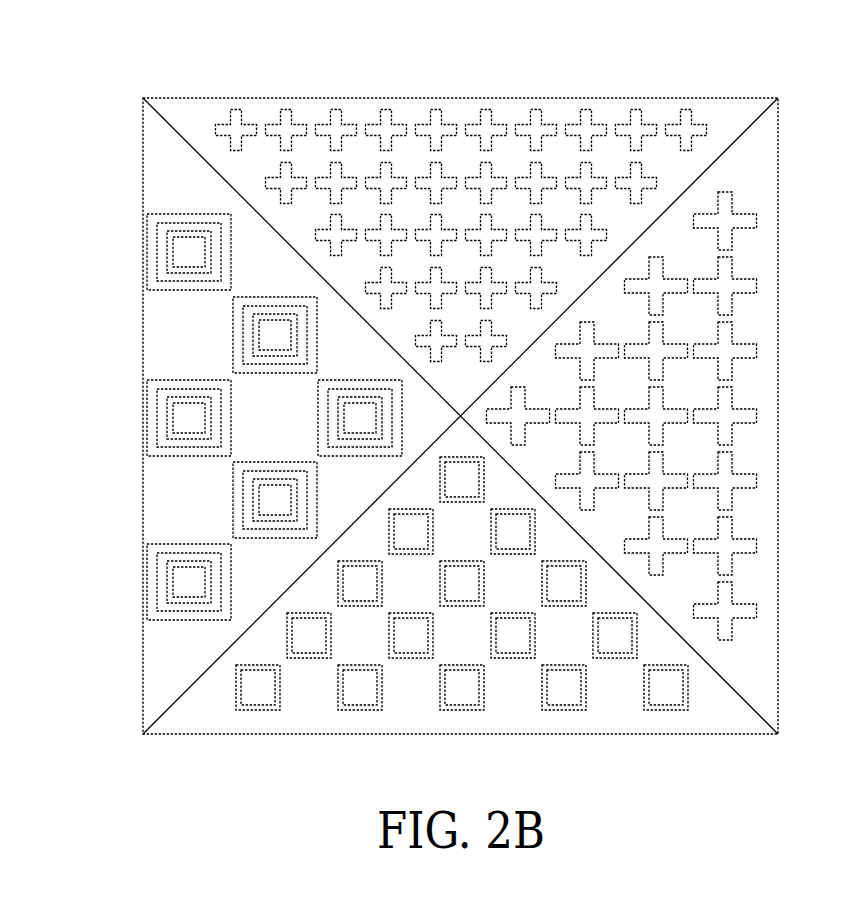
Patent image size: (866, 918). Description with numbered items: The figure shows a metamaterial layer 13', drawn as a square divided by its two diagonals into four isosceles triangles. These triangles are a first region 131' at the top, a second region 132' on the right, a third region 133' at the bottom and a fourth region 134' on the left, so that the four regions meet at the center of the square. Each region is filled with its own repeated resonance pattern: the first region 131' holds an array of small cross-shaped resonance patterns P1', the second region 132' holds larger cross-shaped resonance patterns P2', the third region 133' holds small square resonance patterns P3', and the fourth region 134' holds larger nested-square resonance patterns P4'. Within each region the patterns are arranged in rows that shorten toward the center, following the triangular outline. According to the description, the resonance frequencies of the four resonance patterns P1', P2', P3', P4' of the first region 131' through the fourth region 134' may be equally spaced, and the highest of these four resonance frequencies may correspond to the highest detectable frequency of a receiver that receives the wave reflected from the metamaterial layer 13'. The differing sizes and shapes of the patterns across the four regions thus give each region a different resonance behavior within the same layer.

The metamaterial layer 13' is at (397, 377).
The first region 131' is at (438, 201).
The second region 132' is at (674, 406).
The third region 133' is at (494, 626).
The fourth region 134' is at (234, 461).
The resonance pattern P1' is at (213, 97).
The resonance pattern P2' is at (777, 211).
The resonance pattern P3' is at (698, 730).
The resonance pattern P4' is at (153, 626).